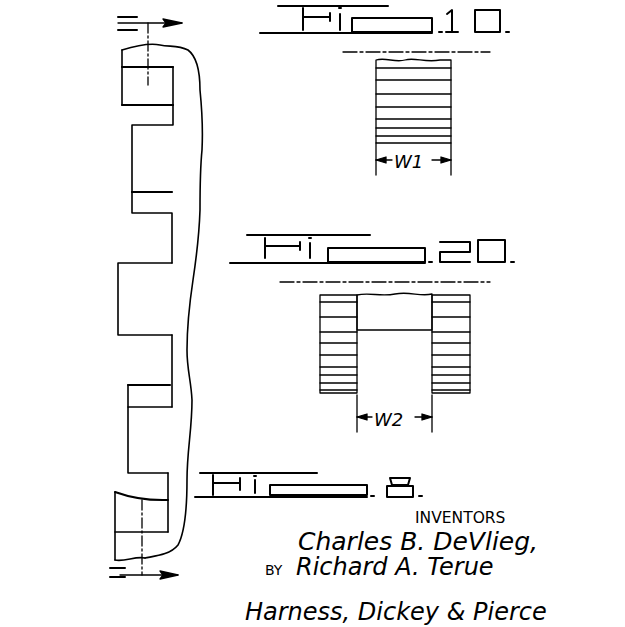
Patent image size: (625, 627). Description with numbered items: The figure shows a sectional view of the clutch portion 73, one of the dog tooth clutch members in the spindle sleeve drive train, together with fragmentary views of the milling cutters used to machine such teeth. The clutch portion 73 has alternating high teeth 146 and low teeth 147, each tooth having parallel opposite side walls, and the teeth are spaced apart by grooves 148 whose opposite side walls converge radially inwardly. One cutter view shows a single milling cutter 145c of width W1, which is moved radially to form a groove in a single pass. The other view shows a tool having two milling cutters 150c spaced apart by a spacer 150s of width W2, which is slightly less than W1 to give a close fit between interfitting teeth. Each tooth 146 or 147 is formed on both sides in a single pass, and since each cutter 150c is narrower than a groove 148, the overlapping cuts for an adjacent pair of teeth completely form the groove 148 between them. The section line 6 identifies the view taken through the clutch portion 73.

In FIG. 8, the section line 6- 6 is at (158, 311).
In FIG. 8, the clutch portion 73 is at (191, 150).
In FIG. 19, the cam block 145c is at (432, 88).
In FIG. 8, the high teeth 146 is at (143, 89).
In FIG. 8, the low teeth 147 is at (145, 163).
In FIG. 8, the grooves 148 is at (165, 92).
In FIG. 20, the spacer 150s is at (417, 310).
In FIG. 20, the milling cutters 150c is at (443, 354).